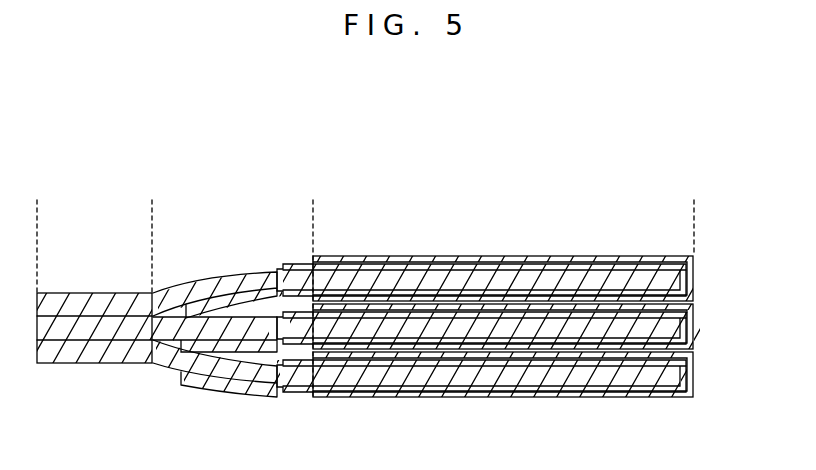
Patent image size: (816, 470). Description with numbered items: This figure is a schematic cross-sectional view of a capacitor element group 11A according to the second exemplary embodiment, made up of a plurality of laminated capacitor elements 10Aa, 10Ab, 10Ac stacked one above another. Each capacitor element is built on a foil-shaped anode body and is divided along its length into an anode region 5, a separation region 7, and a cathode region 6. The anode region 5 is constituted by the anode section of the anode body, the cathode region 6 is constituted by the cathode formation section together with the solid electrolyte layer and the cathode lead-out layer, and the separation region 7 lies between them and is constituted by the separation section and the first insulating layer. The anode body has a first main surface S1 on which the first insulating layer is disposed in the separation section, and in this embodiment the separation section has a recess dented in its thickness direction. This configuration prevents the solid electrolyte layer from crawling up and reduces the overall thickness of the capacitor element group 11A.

The anode region 5 is at (37, 206).
The separation region 7 is at (152, 206).
The cathode region 6 is at (694, 206).
The capacitor element group 11A is at (358, 195).
The first main surface S1 is at (90, 365).
The capacitor element 10Aa is at (700, 256).
The capacitor element 10Ab is at (700, 304).
The capacitor element 10Ac is at (700, 352).